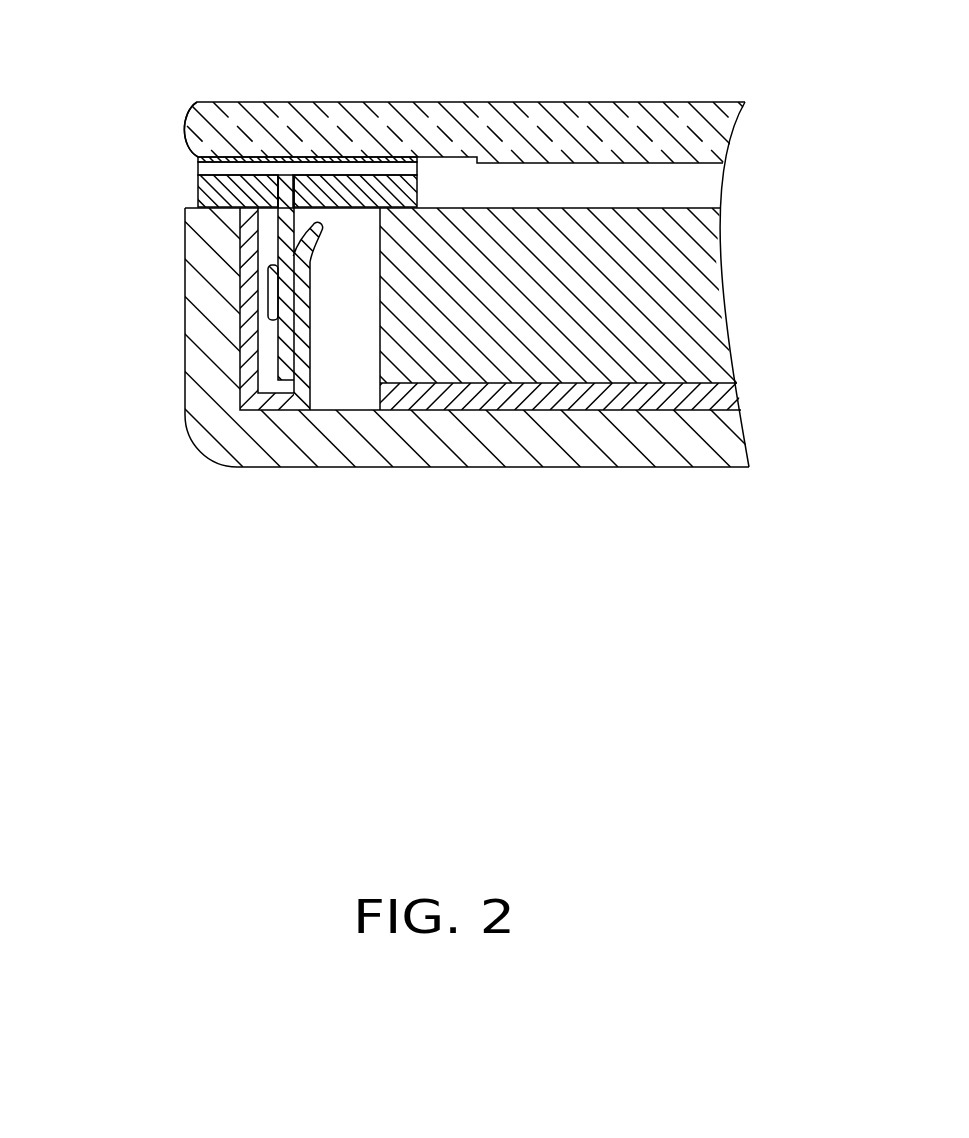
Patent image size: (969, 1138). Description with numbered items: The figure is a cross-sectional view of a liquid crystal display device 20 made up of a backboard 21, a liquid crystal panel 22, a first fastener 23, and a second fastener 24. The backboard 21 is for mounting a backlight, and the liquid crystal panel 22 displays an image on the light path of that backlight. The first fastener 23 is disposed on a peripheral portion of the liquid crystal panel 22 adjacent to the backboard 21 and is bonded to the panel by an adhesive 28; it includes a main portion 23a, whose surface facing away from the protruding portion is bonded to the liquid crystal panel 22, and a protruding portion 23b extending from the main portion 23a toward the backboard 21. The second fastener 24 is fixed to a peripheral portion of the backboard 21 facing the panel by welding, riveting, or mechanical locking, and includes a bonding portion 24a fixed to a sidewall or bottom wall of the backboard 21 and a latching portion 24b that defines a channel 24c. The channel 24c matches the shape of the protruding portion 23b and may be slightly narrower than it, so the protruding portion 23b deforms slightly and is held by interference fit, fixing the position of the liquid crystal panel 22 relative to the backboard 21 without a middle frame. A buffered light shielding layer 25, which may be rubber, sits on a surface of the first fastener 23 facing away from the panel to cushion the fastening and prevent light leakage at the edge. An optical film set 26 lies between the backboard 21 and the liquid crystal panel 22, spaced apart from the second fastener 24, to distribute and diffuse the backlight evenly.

The liquid crystal display device 20 is at (476, 45).
The backboard 21 is at (208, 412).
The liquid crystal panel 22 is at (570, 120).
The first fastener 23 is at (249, 177).
The main portion 23a is at (200, 158).
The protruding portion 23b is at (208, 196).
The second fastener 24 is at (284, 292).
The bonding portion 24a is at (252, 283).
The latching portion 24b is at (277, 300).
The channel 24c is at (277, 315).
The buffered light shielding layer 25 is at (342, 181).
The optical film set 26 is at (692, 303).
The adhesive 28 is at (200, 115).